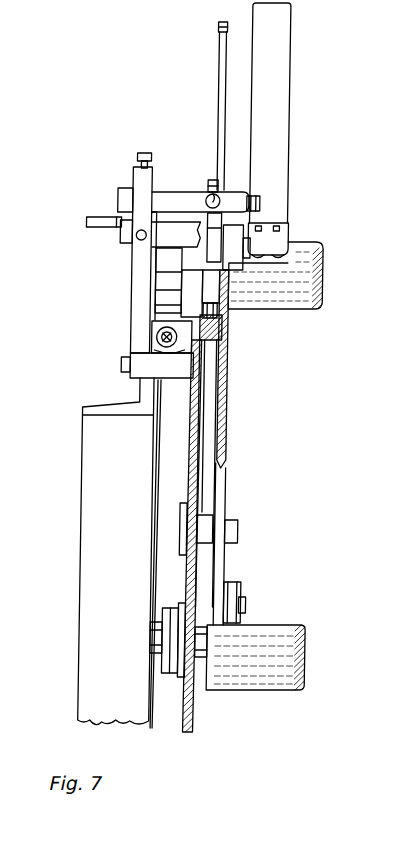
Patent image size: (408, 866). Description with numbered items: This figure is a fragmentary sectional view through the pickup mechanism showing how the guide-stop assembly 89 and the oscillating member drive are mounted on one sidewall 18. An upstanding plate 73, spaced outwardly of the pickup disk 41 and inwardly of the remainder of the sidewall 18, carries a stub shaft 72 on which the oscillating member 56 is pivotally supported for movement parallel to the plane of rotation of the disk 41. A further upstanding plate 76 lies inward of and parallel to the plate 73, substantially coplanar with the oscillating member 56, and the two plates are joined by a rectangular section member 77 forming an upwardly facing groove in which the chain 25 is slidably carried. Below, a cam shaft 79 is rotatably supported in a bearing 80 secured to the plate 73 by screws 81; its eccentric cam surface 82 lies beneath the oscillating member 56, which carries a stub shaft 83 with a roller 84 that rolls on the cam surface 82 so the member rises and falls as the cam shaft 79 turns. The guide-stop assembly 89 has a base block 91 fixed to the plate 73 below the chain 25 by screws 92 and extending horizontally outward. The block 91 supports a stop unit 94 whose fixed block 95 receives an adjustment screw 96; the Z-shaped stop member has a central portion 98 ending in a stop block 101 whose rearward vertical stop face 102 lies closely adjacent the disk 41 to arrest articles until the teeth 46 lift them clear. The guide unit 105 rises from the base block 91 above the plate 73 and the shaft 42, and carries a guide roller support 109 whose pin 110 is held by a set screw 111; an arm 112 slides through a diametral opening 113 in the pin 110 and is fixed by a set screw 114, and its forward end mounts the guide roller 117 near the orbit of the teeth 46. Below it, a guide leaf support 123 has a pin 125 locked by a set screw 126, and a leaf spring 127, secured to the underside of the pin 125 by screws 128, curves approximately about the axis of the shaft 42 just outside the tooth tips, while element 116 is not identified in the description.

The sidewall 18 is at (103, 476).
The chain 25 is at (223, 312).
The pickup disk 41 is at (221, 70).
The shaft 42 is at (314, 267).
The tooth 46 is at (219, 25).
The oscillating member 56 is at (231, 500).
The stub shaft 72 is at (250, 528).
The plate 73 is at (203, 450).
The upstanding plate 76 is at (234, 402).
The rectangular section member 77 is at (219, 332).
The cam shaft 79 is at (222, 641).
The bearing 80 is at (180, 660).
The screws 81 is at (186, 630).
The cam surface 82 is at (257, 676).
The stub shaft 83 is at (259, 604).
The roller 84 is at (244, 582).
The guide-stop assembly 89 is at (117, 124).
The base block 91 is at (164, 370).
The screws 92 is at (202, 396).
The stop unit 94 is at (159, 333).
The fixed block 95 is at (138, 352).
The adjustment screw 96 is at (171, 334).
The central portion 98 is at (157, 314).
The stop block 101 is at (190, 303).
The stop face 102 is at (199, 293).
The guide unit 105 is at (170, 151).
The guide roller support 109 is at (187, 159).
The pin 110 is at (125, 195).
The set screw 111 is at (141, 157).
The arm 112 is at (225, 192).
The diametral opening 113 is at (211, 189).
The set screw 114 is at (267, 203).
The block 116 is at (250, 258).
The guide roller 117 is at (237, 262).
The guide leaf support 123 is at (122, 223).
The pin 125 is at (127, 226).
The set screw 126 is at (144, 234).
The leaf spring 127 is at (282, 66).
The screws 128 is at (300, 250).